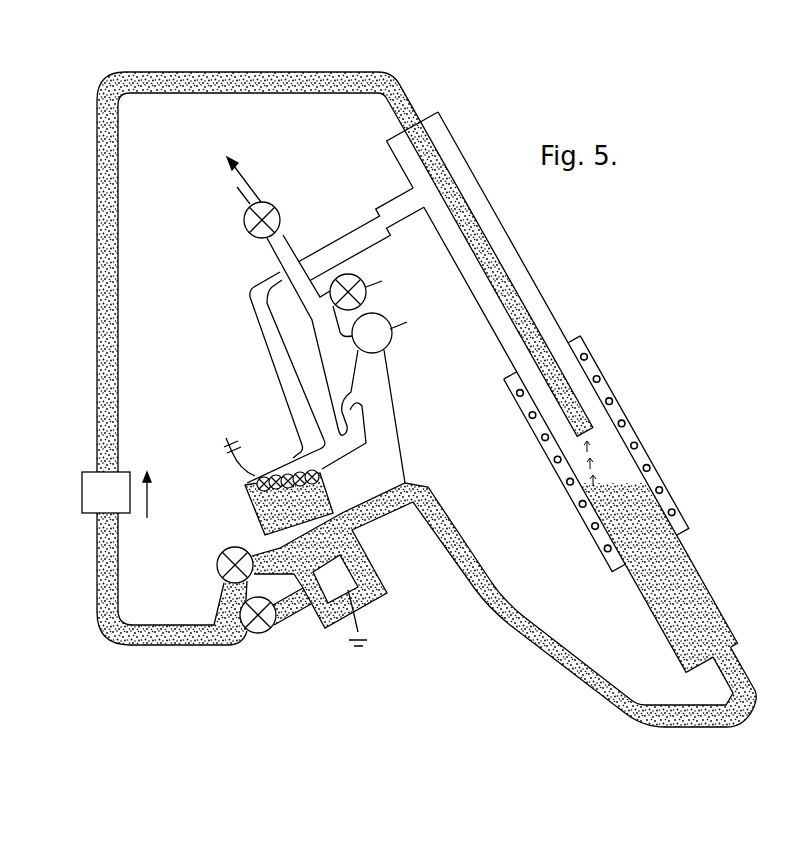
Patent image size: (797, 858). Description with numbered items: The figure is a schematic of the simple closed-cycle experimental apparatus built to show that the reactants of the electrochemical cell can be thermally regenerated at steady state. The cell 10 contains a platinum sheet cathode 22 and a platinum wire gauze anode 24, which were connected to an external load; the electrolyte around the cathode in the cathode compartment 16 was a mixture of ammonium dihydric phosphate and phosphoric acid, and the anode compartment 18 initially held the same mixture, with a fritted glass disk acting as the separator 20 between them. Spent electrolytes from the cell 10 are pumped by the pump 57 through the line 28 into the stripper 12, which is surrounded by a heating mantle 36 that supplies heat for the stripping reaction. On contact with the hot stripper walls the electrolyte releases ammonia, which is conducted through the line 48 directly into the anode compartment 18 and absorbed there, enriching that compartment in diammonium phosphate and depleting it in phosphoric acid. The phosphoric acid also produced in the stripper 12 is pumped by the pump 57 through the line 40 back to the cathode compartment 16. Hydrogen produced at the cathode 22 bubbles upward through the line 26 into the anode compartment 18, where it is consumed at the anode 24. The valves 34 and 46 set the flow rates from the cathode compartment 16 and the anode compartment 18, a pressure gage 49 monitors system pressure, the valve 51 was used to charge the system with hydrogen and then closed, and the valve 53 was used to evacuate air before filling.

The cell 10 is at (306, 607).
The stripper 12 is at (623, 474).
The cathode compartment 16 is at (378, 578).
The anode compartment 18 is at (278, 531).
The separator 20 is at (335, 510).
The cathode 22 is at (362, 597).
The anode 24 is at (260, 507).
The line 26 is at (410, 459).
The line 28 is at (246, 72).
The valve 34 is at (258, 634).
The heating mantle 36 is at (594, 357).
The line 40 is at (540, 656).
The valve 46 is at (218, 574).
The line 48 is at (342, 236).
The pressure gage 49 is at (385, 317).
The valve 51 is at (356, 278).
The valve 53 is at (270, 202).
The pump 57 is at (82, 474).